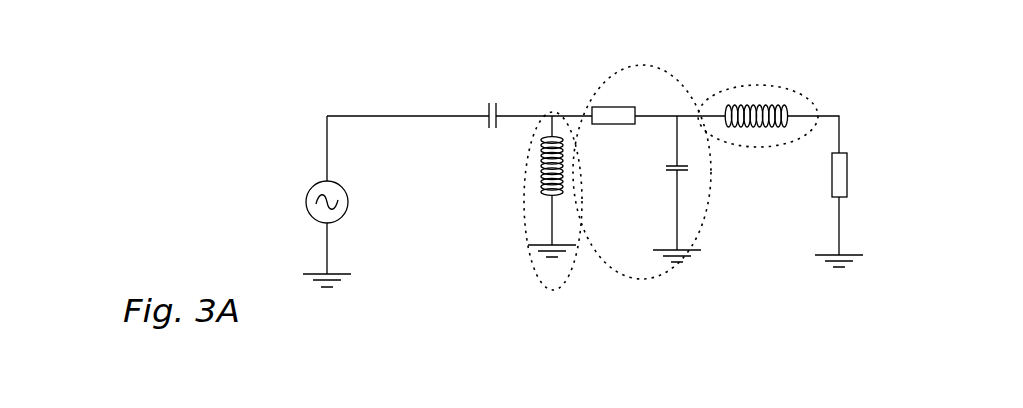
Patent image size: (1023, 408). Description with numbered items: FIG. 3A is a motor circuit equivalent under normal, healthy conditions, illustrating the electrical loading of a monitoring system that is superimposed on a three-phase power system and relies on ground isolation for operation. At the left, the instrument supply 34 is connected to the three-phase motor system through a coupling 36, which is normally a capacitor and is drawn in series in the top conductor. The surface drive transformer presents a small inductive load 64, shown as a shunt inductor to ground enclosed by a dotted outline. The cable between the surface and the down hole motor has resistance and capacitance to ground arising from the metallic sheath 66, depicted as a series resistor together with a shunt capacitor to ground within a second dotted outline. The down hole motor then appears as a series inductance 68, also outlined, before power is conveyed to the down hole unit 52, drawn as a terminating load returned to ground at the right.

The instrument supply 34 is at (305, 207).
The coupling 36 is at (484, 107).
The inductive load 64 is at (565, 285).
The metallic sheath 66 is at (620, 92).
The series inductance 68 is at (767, 92).
The down hole unit 52 is at (853, 175).